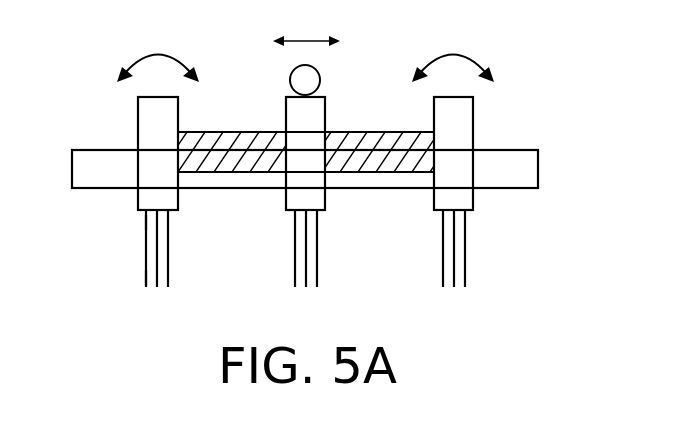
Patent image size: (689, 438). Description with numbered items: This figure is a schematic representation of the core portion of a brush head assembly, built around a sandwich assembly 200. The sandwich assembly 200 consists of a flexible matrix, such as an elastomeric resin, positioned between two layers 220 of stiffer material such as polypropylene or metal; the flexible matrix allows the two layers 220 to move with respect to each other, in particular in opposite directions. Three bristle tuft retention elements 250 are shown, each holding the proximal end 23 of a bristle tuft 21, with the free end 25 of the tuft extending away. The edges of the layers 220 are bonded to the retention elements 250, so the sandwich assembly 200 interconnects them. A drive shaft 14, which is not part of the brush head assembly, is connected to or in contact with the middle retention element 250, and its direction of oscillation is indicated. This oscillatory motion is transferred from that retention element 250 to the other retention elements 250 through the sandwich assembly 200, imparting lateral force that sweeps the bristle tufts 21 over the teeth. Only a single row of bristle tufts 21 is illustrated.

The drive shaft 14 is at (290, 79).
The sandwich assembly 200 is at (202, 190).
The layers 220 is at (369, 132).
The bristle tuft retention element 250 is at (327, 107).
The bristle tuft 21 is at (145, 242).
The proximal end 23 is at (145, 222).
The free end 25 is at (145, 277).